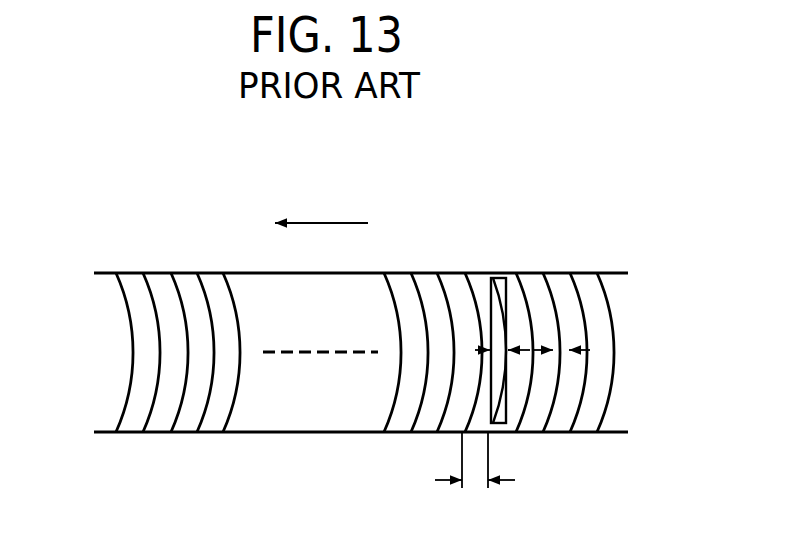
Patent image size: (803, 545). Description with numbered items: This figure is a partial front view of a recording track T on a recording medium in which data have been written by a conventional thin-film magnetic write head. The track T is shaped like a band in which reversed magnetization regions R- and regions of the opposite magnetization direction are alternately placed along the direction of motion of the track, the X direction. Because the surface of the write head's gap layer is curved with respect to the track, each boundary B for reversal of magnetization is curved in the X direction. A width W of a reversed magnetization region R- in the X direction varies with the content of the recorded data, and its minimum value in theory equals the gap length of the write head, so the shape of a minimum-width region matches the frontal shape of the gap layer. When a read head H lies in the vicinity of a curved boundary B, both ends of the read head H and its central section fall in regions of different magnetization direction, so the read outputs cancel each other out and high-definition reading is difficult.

The recording track T is at (415, 273).
The boundary for reversal of magnetization B is at (494, 276).
The reversed magnetization region R- is at (483, 300).
The width of the reversed magnetization region W is at (475, 478).
The read head H is at (502, 412).
The X direction X is at (321, 203).